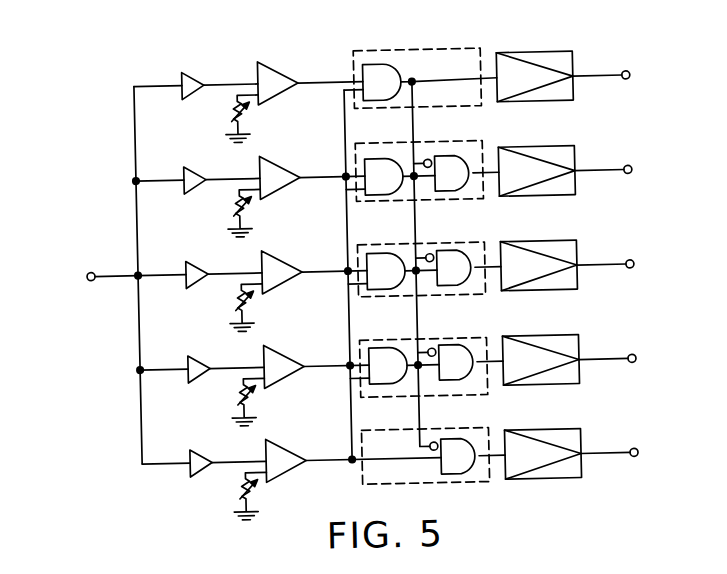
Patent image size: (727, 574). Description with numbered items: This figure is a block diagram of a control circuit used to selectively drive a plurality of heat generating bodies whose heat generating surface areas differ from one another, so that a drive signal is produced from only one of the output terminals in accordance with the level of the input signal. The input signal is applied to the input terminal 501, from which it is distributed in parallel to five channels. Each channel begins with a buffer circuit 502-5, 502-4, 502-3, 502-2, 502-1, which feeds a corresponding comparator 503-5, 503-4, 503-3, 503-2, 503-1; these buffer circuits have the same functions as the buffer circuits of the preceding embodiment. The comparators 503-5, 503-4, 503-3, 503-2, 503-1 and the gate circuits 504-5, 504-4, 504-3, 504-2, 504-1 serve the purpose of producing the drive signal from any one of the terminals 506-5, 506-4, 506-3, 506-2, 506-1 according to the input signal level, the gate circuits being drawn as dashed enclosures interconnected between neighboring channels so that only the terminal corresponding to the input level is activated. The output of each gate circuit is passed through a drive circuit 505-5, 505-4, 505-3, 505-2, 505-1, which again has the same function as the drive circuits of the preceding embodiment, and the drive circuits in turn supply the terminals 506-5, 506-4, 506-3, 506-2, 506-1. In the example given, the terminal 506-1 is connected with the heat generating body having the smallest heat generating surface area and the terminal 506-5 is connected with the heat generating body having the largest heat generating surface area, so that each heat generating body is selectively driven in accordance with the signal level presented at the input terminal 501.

The input terminal 501 is at (88, 267).
The buffer circuit 502-5 is at (197, 63).
The buffer circuit 502-4 is at (197, 158).
The buffer circuit 502-3 is at (197, 252).
The buffer circuit 502-2 is at (197, 346).
The buffer circuit 502-1 is at (197, 440).
The comparator 503-5 is at (285, 51).
The comparator 503-4 is at (285, 146).
The comparator 503-3 is at (285, 240).
The comparator 503-2 is at (285, 334).
The comparator 503-1 is at (285, 428).
The gate circuit 504-5 is at (406, 51).
The gate circuit 504-4 is at (417, 146).
The gate circuit 504-3 is at (423, 245).
The gate circuit 504-2 is at (428, 340).
The gate circuit 504-1 is at (431, 430).
The drive circuit 505-5 is at (540, 56).
The drive circuit 505-4 is at (540, 150).
The drive circuit 505-3 is at (540, 245).
The drive circuit 505-2 is at (540, 340).
The drive circuit 505-1 is at (540, 434).
The terminal 506-5 is at (634, 77).
The terminal 506-4 is at (634, 172).
The terminal 506-3 is at (634, 266).
The terminal 506-2 is at (634, 360).
The terminal 506-1 is at (634, 454).